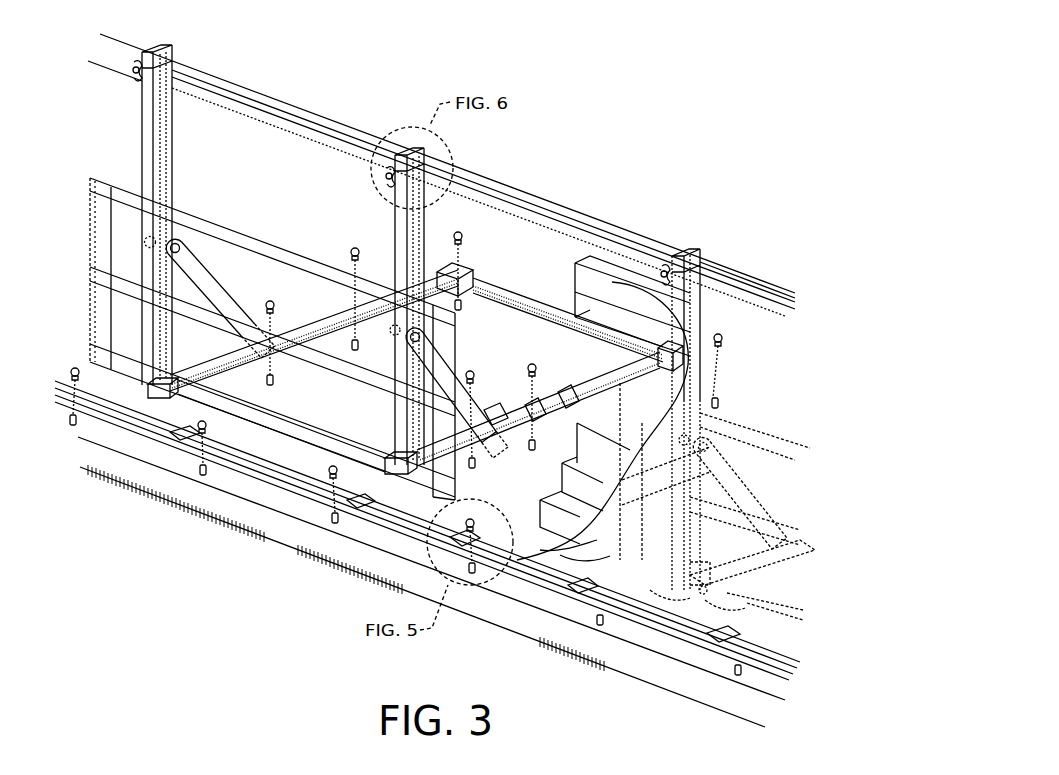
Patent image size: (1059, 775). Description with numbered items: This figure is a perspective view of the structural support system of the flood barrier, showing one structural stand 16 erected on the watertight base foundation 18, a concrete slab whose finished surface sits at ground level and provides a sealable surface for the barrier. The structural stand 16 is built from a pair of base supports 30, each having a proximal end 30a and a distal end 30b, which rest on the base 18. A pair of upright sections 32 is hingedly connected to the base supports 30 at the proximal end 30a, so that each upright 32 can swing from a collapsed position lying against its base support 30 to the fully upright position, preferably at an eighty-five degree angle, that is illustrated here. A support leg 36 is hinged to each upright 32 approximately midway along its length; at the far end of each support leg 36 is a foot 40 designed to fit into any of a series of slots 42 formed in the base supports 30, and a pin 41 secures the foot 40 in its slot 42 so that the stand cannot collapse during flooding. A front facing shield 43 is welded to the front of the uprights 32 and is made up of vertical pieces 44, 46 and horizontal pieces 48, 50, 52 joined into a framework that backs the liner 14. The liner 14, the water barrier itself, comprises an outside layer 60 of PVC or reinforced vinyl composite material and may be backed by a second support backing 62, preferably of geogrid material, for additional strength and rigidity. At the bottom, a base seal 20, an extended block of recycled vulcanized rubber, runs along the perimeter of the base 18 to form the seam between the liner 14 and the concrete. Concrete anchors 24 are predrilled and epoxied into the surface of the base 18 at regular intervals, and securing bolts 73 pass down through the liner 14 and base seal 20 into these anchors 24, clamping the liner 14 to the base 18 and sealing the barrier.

The liner 14 is at (744, 318).
The structural stand 16 is at (110, 160).
The watertight base foundation 18 is at (252, 530).
The base seal 20 is at (367, 517).
The concrete anchor 24 is at (70, 428).
The base support 30 is at (340, 308).
The proximal end of base support 30a is at (163, 389).
The distal end of base support 30b is at (468, 268).
The upright section 32 is at (142, 120).
The support leg 36 is at (204, 262).
The foot 40 is at (482, 440).
The pin 41 is at (533, 362).
The slot 42 is at (492, 408).
The front facing shield 43 is at (92, 265).
The vertical piece 44 is at (104, 219).
The vertical piece 46 is at (455, 478).
The horizontal piece 48 is at (252, 410).
The horizontal piece 50 is at (330, 360).
The horizontal piece 52 is at (258, 243).
The outside layer 60 is at (782, 352).
The second support backing 62 is at (608, 300).
The securing bolt 73 is at (74, 365).